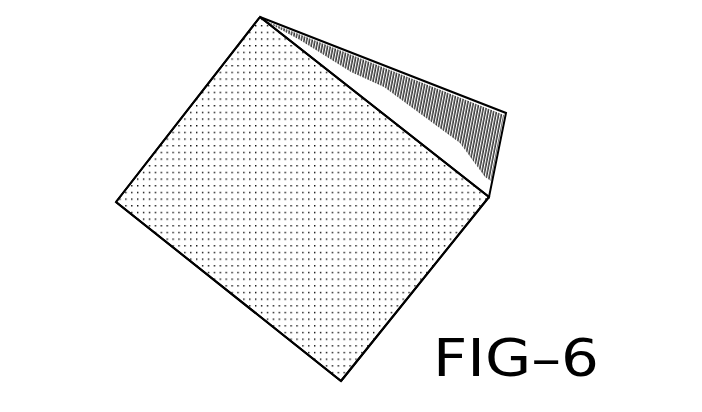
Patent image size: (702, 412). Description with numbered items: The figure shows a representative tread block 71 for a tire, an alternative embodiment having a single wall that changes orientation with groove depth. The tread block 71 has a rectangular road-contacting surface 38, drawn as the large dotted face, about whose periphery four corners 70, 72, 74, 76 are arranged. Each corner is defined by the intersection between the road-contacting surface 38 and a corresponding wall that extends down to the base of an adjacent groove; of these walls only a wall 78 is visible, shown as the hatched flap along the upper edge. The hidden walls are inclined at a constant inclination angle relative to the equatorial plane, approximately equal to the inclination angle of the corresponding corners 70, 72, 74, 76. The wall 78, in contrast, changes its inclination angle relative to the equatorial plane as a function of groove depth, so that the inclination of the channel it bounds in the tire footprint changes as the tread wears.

The tread block 71 is at (146, 58).
The corner 76 is at (165, 130).
The wall 78 is at (376, 98).
The corner 70 is at (453, 167).
The road-contacting surface 38 is at (222, 199).
The corner 74 is at (258, 314).
The corner 72 is at (438, 256).